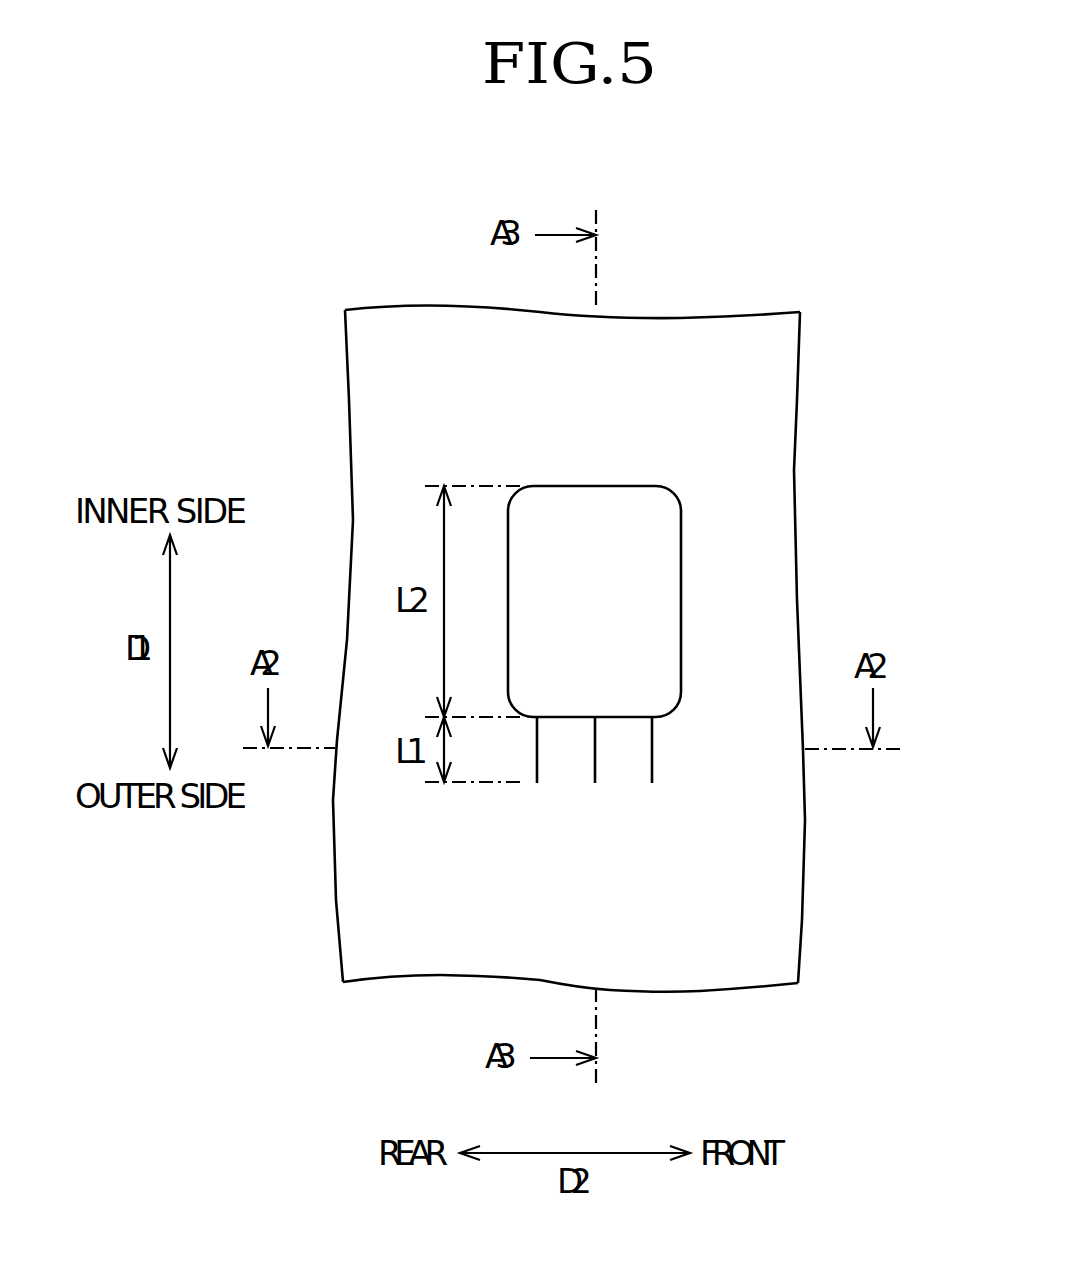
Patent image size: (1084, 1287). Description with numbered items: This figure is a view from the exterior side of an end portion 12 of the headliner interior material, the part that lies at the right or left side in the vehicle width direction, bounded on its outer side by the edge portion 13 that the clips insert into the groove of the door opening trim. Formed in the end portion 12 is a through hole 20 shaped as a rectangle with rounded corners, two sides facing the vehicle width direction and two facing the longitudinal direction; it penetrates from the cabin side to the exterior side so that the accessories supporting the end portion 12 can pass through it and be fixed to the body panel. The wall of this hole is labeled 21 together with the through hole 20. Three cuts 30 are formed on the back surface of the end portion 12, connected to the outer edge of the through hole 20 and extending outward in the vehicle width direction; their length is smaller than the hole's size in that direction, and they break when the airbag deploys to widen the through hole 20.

The end portion 12 is at (765, 377).
The edge portion 13 is at (728, 990).
The through hole 20 is at (725, 601).
The sensor body 21 is at (681, 553).
The cut 30 is at (537, 770).